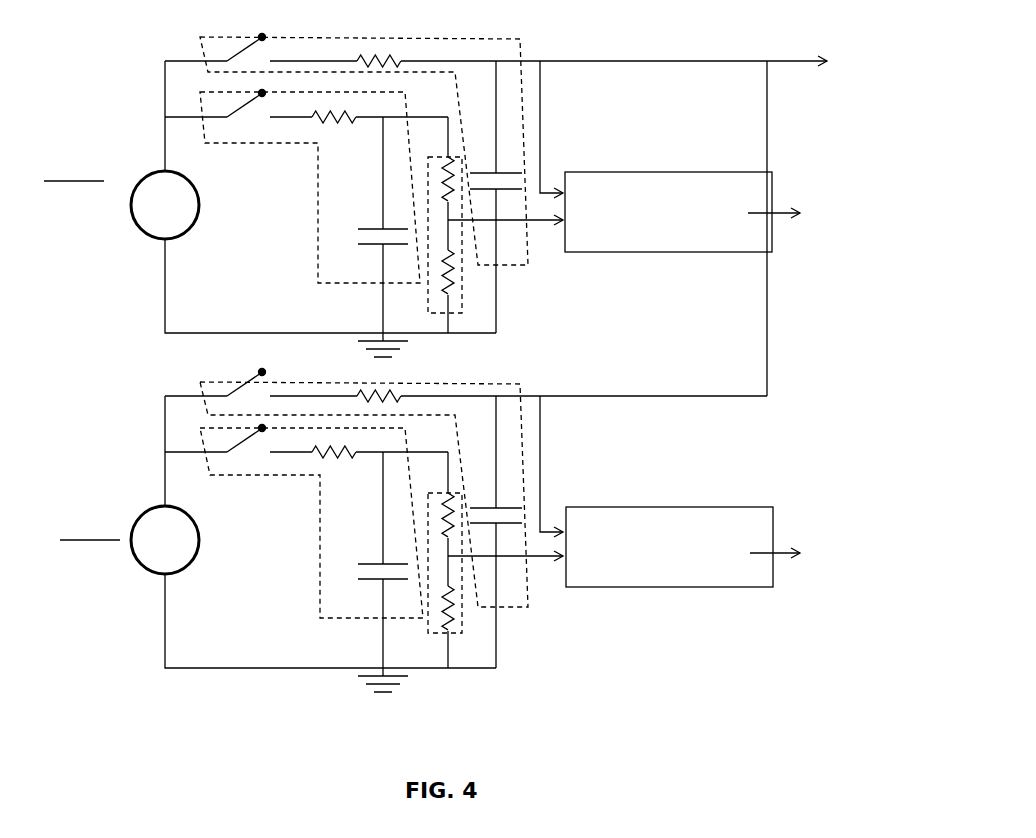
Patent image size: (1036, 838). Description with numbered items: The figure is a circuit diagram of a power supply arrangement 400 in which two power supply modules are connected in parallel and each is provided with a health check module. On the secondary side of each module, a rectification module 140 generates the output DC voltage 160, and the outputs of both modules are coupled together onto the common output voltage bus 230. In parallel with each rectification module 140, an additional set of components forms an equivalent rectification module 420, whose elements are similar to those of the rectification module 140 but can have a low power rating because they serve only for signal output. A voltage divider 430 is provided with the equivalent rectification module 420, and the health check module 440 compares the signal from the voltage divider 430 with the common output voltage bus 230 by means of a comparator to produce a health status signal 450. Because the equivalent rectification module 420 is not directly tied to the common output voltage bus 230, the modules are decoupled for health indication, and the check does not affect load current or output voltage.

The power system with parallel power modules 400 is at (75, 655).
The rectification module 140 is at (528, 52).
The output DC voltage 160 is at (630, 52).
The common output voltage bus 230 is at (772, 147).
The equivalent rectification module 420 is at (318, 279).
The voltage divider 430 is at (470, 312).
The health check module 440 is at (632, 258).
The health status signal 450 is at (788, 203).